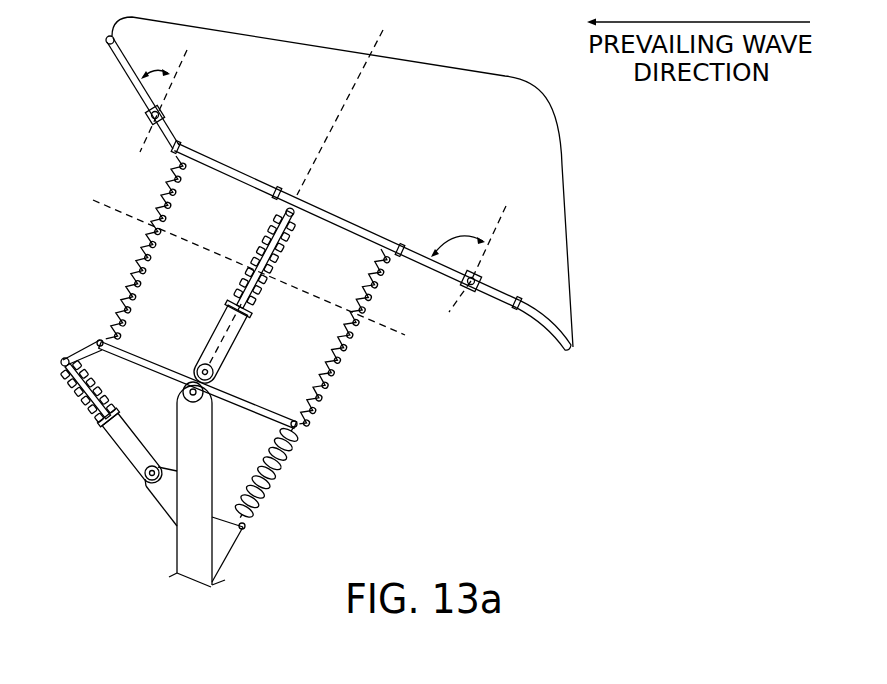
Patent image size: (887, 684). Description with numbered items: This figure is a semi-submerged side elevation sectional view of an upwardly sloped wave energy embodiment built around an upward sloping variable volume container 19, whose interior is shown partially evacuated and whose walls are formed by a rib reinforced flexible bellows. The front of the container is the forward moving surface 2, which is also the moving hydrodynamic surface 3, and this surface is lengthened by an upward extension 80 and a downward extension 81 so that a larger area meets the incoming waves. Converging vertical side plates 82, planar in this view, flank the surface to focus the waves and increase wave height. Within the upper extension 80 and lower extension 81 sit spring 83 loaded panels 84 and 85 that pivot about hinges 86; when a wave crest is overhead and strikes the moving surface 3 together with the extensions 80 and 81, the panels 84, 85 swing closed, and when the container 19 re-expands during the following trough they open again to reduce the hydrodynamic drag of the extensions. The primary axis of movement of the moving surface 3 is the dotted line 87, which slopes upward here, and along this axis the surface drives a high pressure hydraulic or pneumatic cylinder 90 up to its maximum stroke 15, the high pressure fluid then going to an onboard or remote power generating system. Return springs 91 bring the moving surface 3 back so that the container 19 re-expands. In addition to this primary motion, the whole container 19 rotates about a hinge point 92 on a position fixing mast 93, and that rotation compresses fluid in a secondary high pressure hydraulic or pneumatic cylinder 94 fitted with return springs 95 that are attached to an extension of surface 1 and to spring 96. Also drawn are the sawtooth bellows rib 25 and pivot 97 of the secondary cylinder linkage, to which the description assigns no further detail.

The surface 1 is at (128, 350).
The forward moving surface 2 is at (346, 225).
The moving hydrodynamic surface 3 is at (327, 212).
The maximum stroke 15 is at (232, 248).
The variable volume container 19 is at (338, 351).
The flexible link spring 25 is at (148, 218).
The upward extension 80 is at (104, 41).
The downward extension 81 is at (553, 315).
The converging vertical side plate 82 is at (453, 66).
The spring 83 is at (136, 97).
The panel 84 is at (193, 58).
The panel 85 is at (493, 221).
The hinge 86 is at (480, 295).
The primary axis of movement 87 is at (350, 101).
The high pressure hydraulic or pneumatic cylinder 90 is at (240, 357).
The return spring 91 is at (296, 257).
The hinge point 92 is at (183, 393).
The position fixing mast 93 is at (175, 550).
The secondary high pressure hydraulic or pneumatic cylinder 94 is at (117, 456).
The return spring 95 is at (70, 400).
The return spring 96 is at (282, 478).
The pivot pin 97 is at (64, 356).